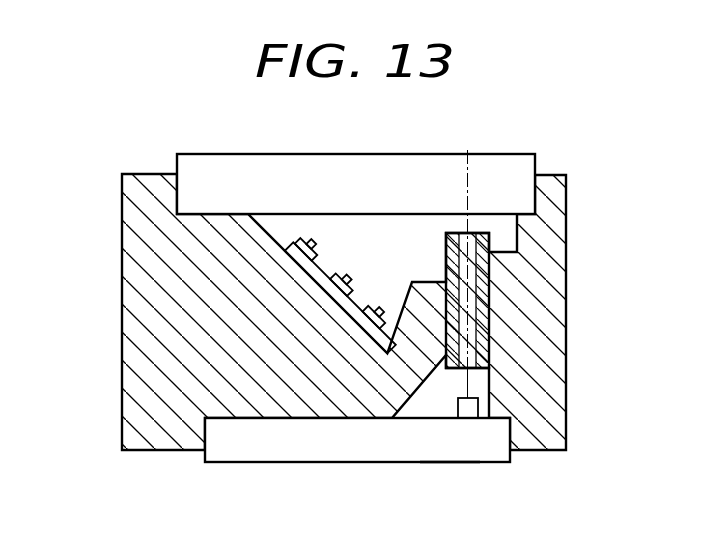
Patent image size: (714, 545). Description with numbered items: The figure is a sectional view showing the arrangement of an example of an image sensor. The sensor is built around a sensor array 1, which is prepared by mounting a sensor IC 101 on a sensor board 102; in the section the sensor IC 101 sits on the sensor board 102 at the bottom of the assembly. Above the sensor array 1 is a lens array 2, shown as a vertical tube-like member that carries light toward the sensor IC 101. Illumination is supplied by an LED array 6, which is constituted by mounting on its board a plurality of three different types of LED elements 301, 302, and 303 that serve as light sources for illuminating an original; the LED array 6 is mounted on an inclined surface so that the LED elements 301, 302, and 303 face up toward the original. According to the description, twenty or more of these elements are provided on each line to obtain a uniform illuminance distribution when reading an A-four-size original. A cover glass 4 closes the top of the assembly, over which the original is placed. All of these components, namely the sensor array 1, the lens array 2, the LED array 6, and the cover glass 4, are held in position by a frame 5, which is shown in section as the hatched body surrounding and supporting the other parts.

The sensor array 1 is at (270, 452).
The lens array 2 is at (489, 298).
The cover glass 4 is at (213, 165).
The frame 5 is at (137, 211).
The LED array 6 is at (365, 323).
The sensor IC 101 is at (478, 404).
The sensor board 102 is at (447, 455).
The LED element 301 is at (313, 240).
The LED element 302 is at (349, 276).
The LED element 303 is at (382, 308).